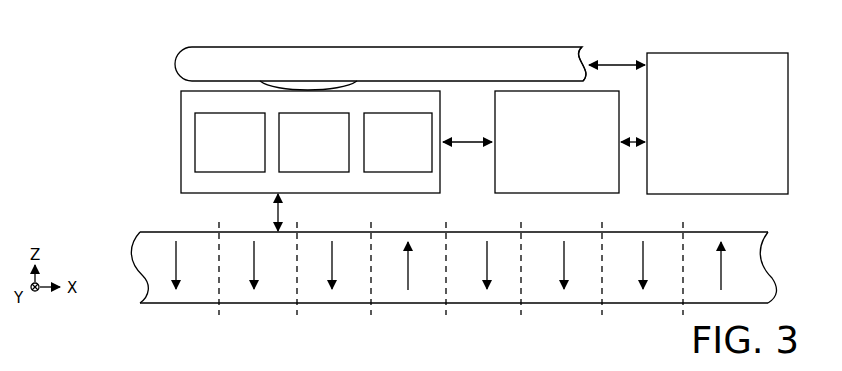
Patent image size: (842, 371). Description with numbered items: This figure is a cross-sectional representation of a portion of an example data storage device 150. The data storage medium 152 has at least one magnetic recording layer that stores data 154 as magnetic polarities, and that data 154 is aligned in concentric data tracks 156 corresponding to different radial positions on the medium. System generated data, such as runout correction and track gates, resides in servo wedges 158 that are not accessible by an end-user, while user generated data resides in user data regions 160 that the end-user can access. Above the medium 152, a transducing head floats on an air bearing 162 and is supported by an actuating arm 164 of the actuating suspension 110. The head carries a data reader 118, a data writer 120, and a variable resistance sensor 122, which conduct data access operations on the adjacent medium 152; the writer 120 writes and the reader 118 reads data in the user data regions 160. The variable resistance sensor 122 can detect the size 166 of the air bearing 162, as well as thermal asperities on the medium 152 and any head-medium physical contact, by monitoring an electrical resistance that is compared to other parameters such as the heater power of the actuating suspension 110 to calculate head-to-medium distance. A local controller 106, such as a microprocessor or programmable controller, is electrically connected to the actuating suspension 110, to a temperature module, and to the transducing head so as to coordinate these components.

The data storage device 150 is at (140, 31).
The actuating suspension 110 is at (587, 40).
The actuating arm 164 is at (482, 73).
The air bearing 162 is at (193, 207).
The data reader 118 is at (214, 153).
The data writer 120 is at (298, 153).
The variable resistance sensor 122 is at (382, 153).
The local controller 106 is at (540, 191).
The size of the air bearing 166 is at (261, 212).
The data storage medium 152 is at (150, 232).
The data 154 is at (410, 290).
The data tracks 156 is at (297, 311).
The servo wedges 158 is at (564, 315).
The user data regions 160 is at (176, 321).